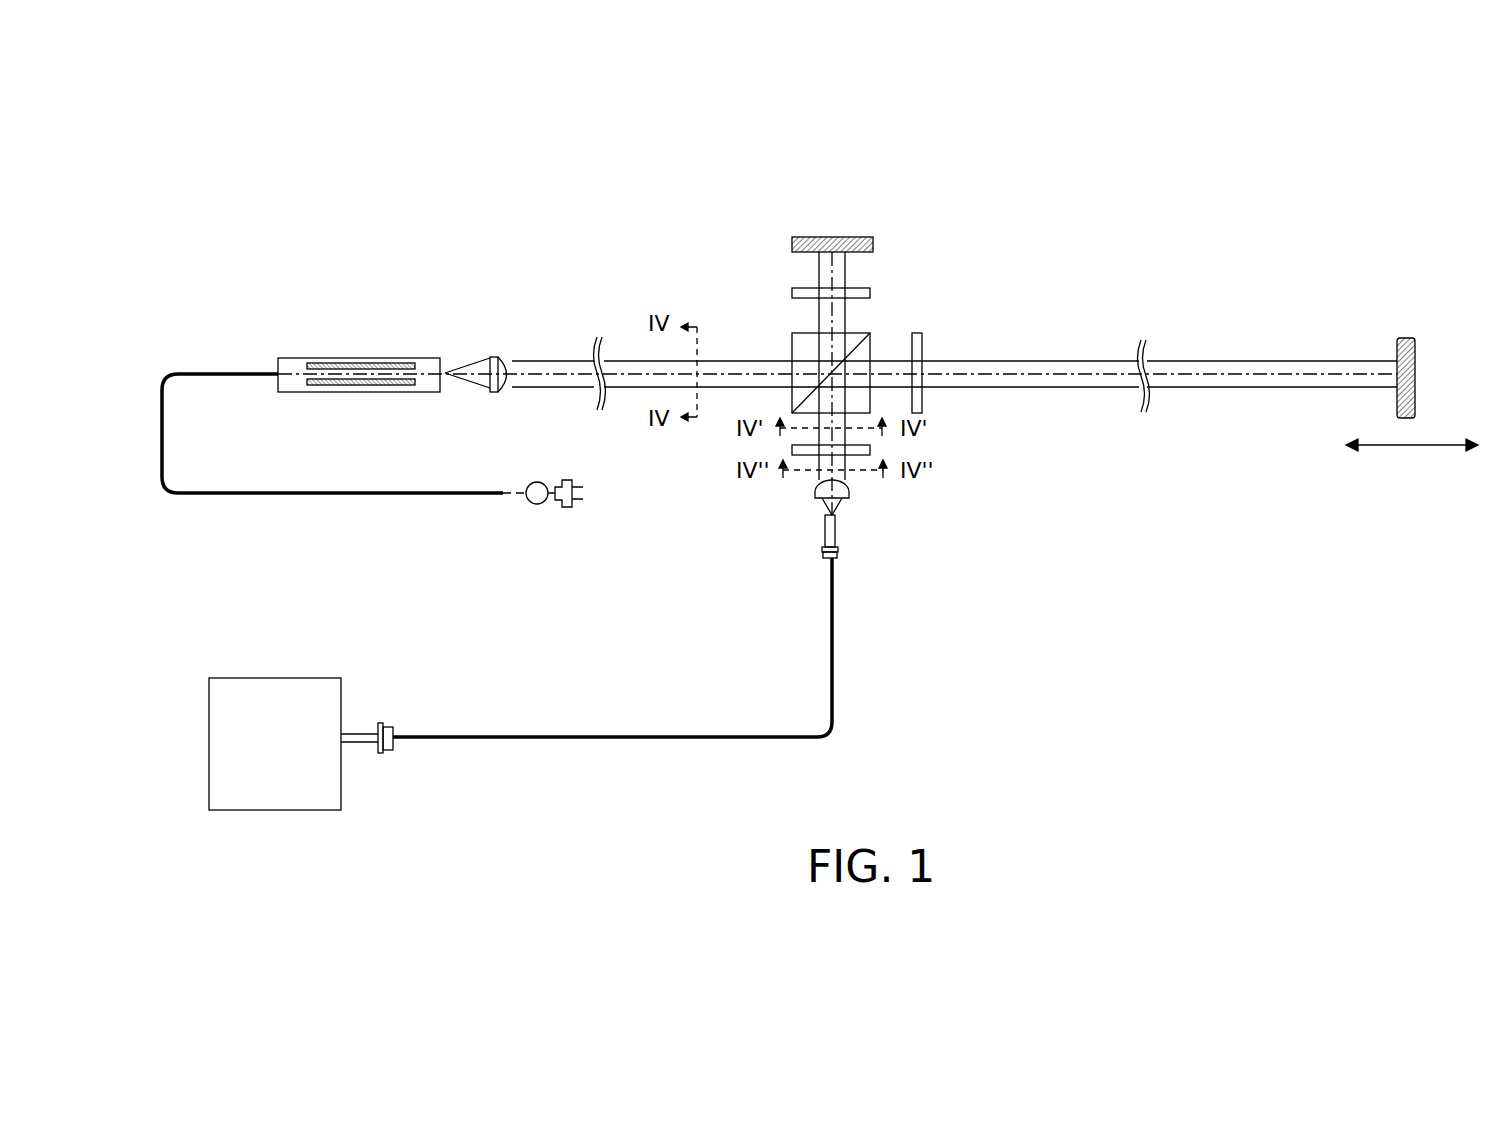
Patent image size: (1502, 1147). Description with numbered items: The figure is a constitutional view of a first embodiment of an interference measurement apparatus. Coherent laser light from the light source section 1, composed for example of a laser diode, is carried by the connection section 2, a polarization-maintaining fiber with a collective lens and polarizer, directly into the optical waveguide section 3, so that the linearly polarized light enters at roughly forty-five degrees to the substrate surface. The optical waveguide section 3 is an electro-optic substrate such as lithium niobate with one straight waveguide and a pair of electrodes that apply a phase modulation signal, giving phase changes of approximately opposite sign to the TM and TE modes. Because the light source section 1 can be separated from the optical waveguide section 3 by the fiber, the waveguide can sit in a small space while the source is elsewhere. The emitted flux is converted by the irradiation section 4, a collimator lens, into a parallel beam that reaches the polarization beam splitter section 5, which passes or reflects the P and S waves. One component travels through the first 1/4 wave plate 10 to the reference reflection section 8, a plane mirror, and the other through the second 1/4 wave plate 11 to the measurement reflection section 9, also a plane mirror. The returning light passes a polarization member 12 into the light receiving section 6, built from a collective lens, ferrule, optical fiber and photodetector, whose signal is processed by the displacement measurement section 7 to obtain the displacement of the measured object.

The light source section 1 is at (548, 513).
The connection section 2 is at (218, 520).
The optical waveguide section 3 is at (338, 357).
The irradiation section 4 is at (496, 340).
The polarization beam splitter section 5 is at (792, 334).
The light receiving section 6 is at (393, 723).
The displacement measurement section 7 is at (285, 678).
The reference reflection section 8 is at (872, 240).
The measurement reflection section 9 is at (1397, 342).
The first 1/4 wave plate 10 is at (870, 288).
The second 1/4 wave plate 11 is at (922, 337).
The polarization member 12 is at (865, 457).